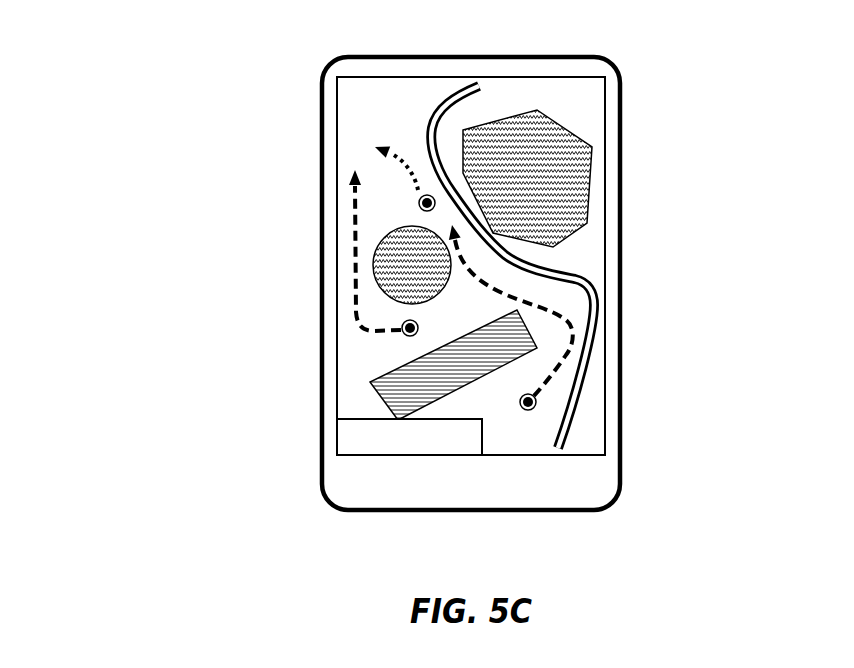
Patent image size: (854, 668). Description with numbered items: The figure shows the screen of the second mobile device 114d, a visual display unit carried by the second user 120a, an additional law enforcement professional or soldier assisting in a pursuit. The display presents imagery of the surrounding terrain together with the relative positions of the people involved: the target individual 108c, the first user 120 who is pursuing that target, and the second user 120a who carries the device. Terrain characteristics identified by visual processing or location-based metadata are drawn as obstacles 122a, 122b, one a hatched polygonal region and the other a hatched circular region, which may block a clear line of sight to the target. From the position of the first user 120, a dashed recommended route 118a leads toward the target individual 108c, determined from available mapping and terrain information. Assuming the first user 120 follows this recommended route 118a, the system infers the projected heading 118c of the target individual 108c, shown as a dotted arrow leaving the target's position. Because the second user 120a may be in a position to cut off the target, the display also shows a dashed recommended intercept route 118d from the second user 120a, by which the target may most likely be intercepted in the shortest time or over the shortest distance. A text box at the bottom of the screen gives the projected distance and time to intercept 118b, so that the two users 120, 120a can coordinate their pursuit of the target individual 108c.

The second mobile device 114d is at (105, 89).
The target individual 108c is at (427, 195).
The recommended route 118a is at (567, 313).
The projected distance and time to intercept 118b is at (338, 438).
The projected heading 118c is at (373, 152).
The recommended intercept route 118d is at (352, 233).
The user 120 is at (537, 402).
The second user 120a is at (409, 335).
The obstacle 122a is at (527, 328).
The obstacle 122b is at (373, 267).